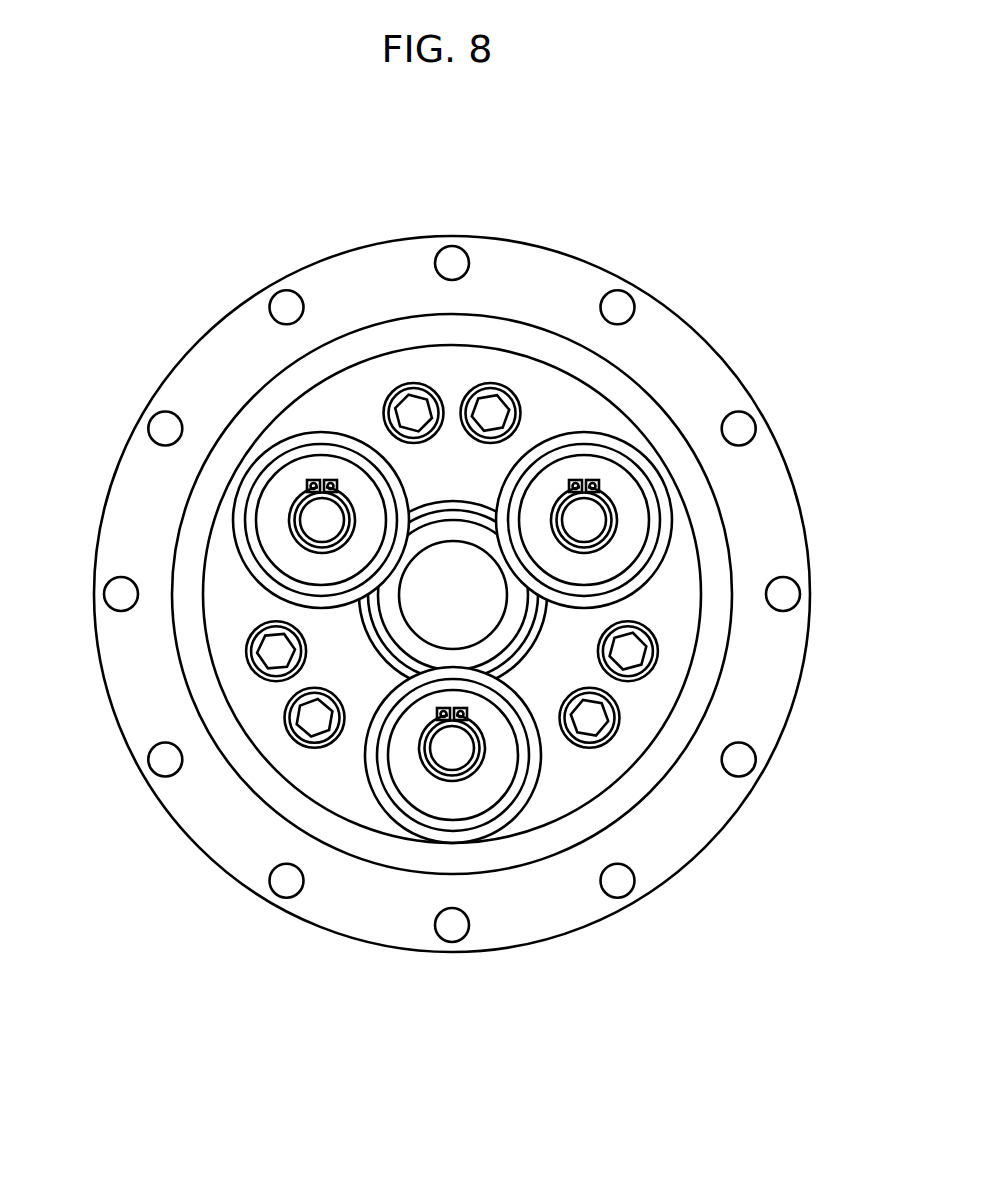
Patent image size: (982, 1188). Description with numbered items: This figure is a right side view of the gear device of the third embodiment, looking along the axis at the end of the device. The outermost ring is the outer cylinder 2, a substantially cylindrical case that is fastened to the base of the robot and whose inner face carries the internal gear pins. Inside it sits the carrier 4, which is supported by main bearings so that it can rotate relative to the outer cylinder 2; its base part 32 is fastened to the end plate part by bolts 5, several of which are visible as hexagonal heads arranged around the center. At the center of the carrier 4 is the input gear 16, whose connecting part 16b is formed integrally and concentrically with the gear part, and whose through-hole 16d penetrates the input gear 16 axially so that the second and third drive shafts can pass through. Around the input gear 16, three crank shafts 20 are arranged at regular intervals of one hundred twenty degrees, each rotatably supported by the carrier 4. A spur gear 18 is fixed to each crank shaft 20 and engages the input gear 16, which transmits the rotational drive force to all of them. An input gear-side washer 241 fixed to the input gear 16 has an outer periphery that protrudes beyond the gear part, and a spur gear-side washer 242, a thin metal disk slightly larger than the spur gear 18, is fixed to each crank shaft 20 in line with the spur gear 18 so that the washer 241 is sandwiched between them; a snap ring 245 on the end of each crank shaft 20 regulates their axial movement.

The outer cylinder 2 is at (672, 357).
The carrier 4 is at (500, 343).
The bolt 5 is at (492, 413).
The input gear 16 is at (512, 625).
The connecting part 16b is at (497, 647).
The through-hole 16d is at (415, 557).
The spur gear 18 is at (328, 465).
The crank shaft 20 is at (318, 522).
The base part 32 is at (452, 363).
The input gear-side washer 241 is at (423, 503).
The spur gear-side washer 242 is at (286, 440).
The snap ring 245 is at (288, 523).